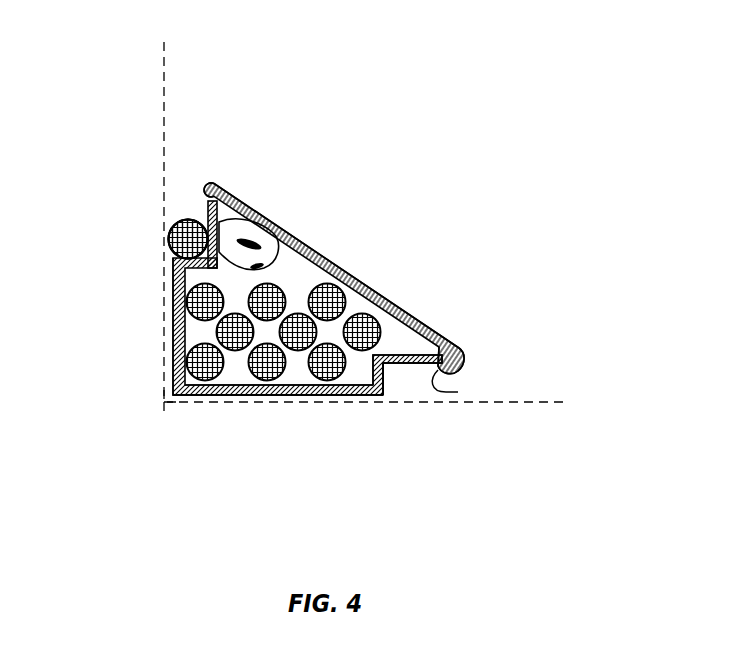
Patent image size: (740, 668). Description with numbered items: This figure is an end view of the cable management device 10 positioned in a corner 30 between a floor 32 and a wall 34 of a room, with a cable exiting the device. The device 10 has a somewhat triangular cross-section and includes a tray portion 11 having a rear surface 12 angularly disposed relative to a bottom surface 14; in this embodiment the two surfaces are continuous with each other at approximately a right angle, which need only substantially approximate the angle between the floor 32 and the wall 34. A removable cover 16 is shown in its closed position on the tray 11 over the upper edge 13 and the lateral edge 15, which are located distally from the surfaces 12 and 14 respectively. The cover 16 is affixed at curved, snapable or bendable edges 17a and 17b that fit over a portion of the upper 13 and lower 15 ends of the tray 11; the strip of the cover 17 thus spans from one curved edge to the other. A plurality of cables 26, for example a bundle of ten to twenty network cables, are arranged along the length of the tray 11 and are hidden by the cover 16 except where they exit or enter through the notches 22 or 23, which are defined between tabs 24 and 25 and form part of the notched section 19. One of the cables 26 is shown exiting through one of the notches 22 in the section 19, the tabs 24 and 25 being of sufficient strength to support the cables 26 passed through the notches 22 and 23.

The cable management device 10 is at (482, 163).
The tray portion 11 is at (175, 370).
The rear surface 12 is at (175, 340).
The upper edge 13 is at (200, 204).
The bottom surface 14 is at (262, 394).
The lateral edge 15 is at (428, 372).
The removable cover 16 is at (327, 258).
The cover strip 17 is at (209, 182).
The snapable edge 17a is at (203, 202).
The snapable edge 17b is at (458, 392).
The notched section 19 is at (463, 354).
The notch 22 is at (160, 213).
The notch 23 is at (397, 372).
The tab 24 is at (178, 206).
The tab 25 is at (410, 377).
The cables 26 is at (173, 257).
The corner 30 is at (165, 402).
The floor 32 is at (543, 402).
The wall 34 is at (162, 83).